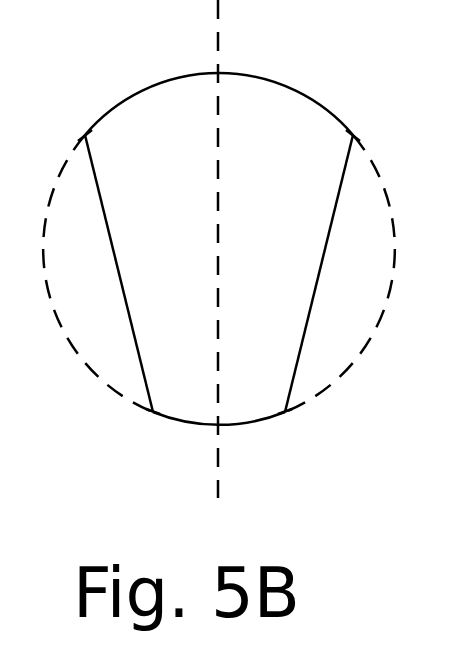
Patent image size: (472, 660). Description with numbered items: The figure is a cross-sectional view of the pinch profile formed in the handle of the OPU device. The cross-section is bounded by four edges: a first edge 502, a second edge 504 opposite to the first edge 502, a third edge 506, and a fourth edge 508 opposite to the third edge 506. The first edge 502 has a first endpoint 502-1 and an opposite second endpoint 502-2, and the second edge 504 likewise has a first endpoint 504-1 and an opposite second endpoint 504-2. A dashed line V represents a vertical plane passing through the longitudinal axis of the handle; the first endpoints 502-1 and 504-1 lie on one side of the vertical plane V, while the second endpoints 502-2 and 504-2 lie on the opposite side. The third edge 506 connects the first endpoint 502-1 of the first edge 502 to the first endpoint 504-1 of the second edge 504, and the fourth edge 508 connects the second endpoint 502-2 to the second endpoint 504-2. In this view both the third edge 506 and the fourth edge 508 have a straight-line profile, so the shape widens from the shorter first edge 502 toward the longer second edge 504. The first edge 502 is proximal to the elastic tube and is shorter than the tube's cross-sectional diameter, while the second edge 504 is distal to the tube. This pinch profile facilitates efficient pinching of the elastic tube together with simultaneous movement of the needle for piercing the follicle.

The first edge 502 is at (238, 425).
The first endpoint of the first edge 502-1 is at (153, 412).
The second endpoint of the first edge 502-2 is at (285, 412).
The second edge 504 is at (300, 92).
The first endpoint of the second edge 504-1 is at (86, 133).
The second endpoint of the second edge 504-2 is at (355, 137).
The third edge 506 is at (102, 183).
The fourth edge 508 is at (334, 205).
The vertical plane V is at (218, 262).